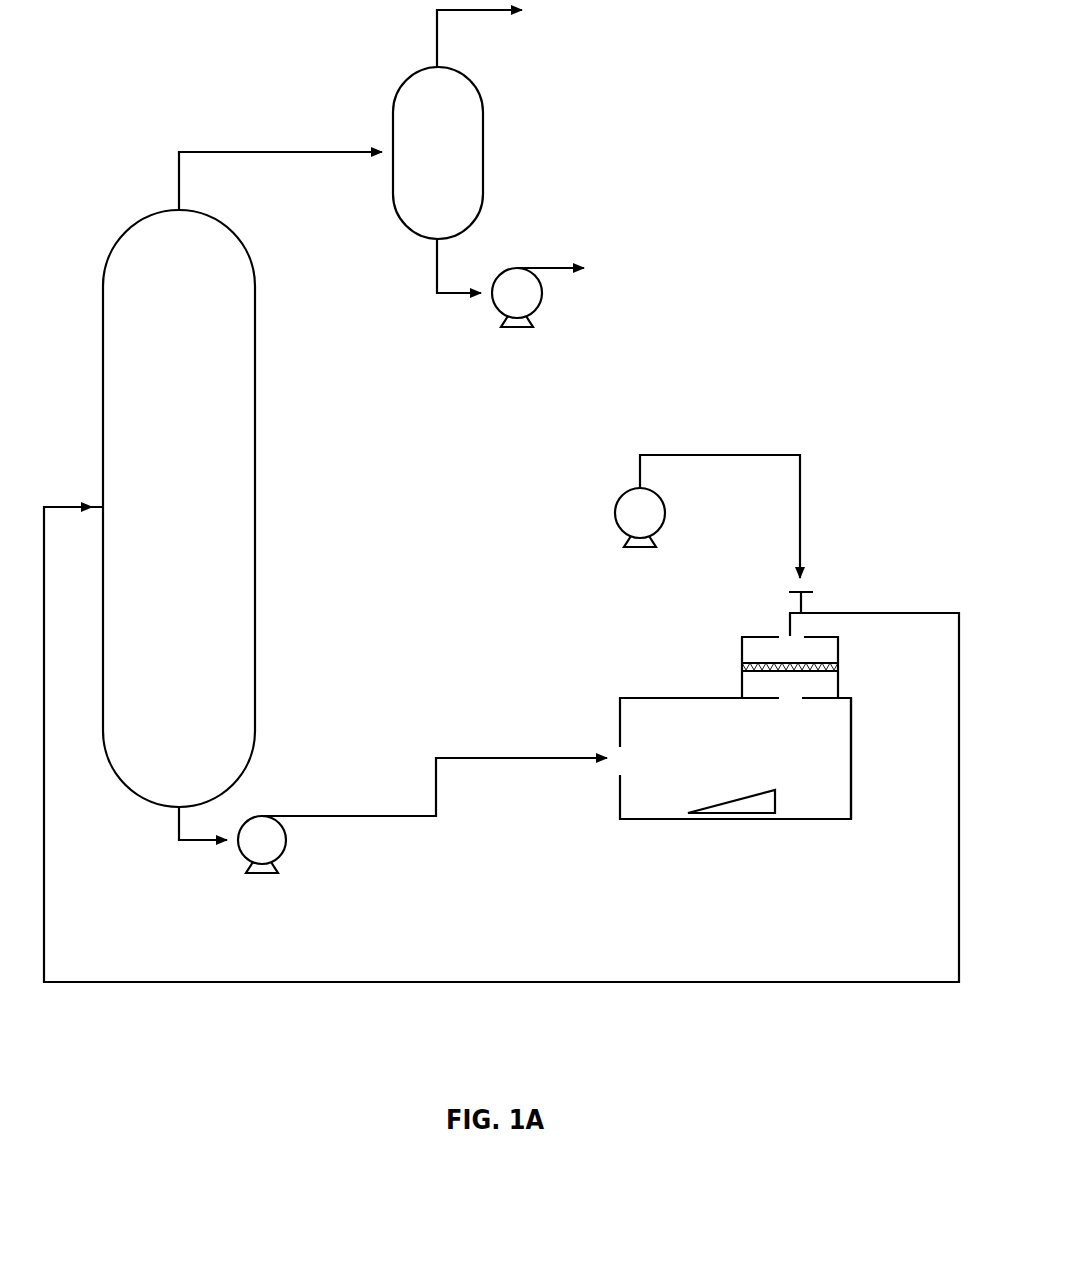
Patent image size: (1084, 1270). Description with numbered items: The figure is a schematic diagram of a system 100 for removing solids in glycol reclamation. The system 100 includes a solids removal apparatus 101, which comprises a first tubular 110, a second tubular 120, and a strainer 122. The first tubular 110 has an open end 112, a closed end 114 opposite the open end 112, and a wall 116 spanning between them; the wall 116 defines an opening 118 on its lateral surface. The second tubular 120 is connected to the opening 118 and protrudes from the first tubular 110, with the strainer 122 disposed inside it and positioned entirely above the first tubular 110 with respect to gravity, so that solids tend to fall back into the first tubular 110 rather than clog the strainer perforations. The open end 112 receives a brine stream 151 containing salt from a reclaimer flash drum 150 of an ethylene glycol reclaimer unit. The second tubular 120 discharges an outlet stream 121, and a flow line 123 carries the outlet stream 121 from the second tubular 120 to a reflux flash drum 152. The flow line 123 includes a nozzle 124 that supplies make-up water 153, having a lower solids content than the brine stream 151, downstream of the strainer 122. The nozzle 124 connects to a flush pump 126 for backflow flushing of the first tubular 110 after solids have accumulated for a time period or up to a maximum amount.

The system 100 is at (194, 1030).
The solids removal apparatus 101 is at (842, 898).
The first tubular 110 is at (671, 845).
The open end 112 is at (603, 777).
The closed end 114 is at (853, 788).
The wall 116 is at (793, 820).
The opening 118 is at (765, 688).
The second tubular 120 is at (742, 652).
The outlet stream 121 is at (874, 563).
The strainer 122 is at (838, 668).
The flow line 123 is at (850, 613).
The nozzle 124 is at (799, 606).
The flush pump 126 is at (622, 493).
The reclaimer flash drum 150 is at (163, 522).
The brine stream 151 is at (469, 758).
The reflux flash drum 152 is at (421, 169).
The make-up water 153 is at (709, 455).